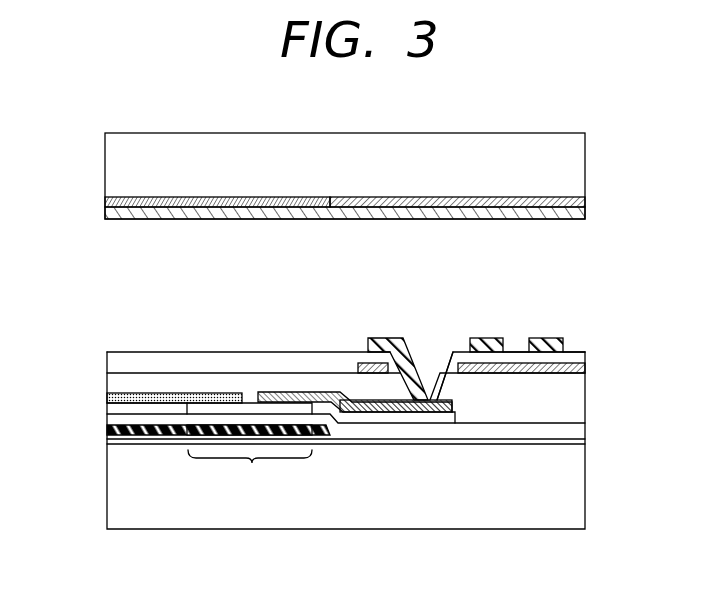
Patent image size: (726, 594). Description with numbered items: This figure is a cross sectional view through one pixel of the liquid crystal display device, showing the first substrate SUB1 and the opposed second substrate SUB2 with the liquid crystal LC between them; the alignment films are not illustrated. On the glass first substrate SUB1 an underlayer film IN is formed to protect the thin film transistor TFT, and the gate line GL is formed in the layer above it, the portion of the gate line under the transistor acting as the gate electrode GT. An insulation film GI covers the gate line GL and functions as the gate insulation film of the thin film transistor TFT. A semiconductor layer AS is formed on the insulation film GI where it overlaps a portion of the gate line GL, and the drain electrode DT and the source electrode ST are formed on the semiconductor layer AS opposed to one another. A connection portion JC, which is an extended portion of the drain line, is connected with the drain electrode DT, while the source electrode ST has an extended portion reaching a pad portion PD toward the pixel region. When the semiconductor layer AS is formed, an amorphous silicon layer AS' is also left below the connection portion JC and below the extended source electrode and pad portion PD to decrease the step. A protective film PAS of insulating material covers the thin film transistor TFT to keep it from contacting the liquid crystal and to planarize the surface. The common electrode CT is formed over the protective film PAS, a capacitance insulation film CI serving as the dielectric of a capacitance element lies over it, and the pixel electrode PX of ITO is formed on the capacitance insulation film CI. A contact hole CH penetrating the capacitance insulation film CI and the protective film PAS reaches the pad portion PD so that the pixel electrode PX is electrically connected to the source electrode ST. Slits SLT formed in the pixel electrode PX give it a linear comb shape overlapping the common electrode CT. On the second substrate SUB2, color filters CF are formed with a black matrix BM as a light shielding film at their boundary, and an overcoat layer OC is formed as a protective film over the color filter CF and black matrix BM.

The second substrate SUB2 is at (578, 155).
The black matrix BM is at (226, 197).
The color filter CF is at (400, 197).
The overcoat layer OC is at (586, 208).
The first substrate SUB1 is at (585, 497).
The underlayer film IN is at (585, 441).
The gate line GL is at (140, 436).
The gate electrode GT is at (208, 436).
The insulation film GI is at (585, 426).
The amorphous silicon layer AS' is at (247, 489).
The connection portion JC is at (145, 393).
The drain electrode DT is at (204, 393).
The semiconductor layer AS is at (249, 354).
The source electrode ST is at (290, 392).
The pad portion PD is at (362, 413).
The protective film PAS is at (107, 387).
The capacitance insulation film CI is at (105, 367).
The common electrode CT is at (366, 363).
The contact hole CH is at (438, 372).
The pixel electrode PX is at (392, 338).
The slit SLT is at (518, 347).
The thin film transistor TFT is at (250, 474).
The liquid crystal LC is at (317, 266).